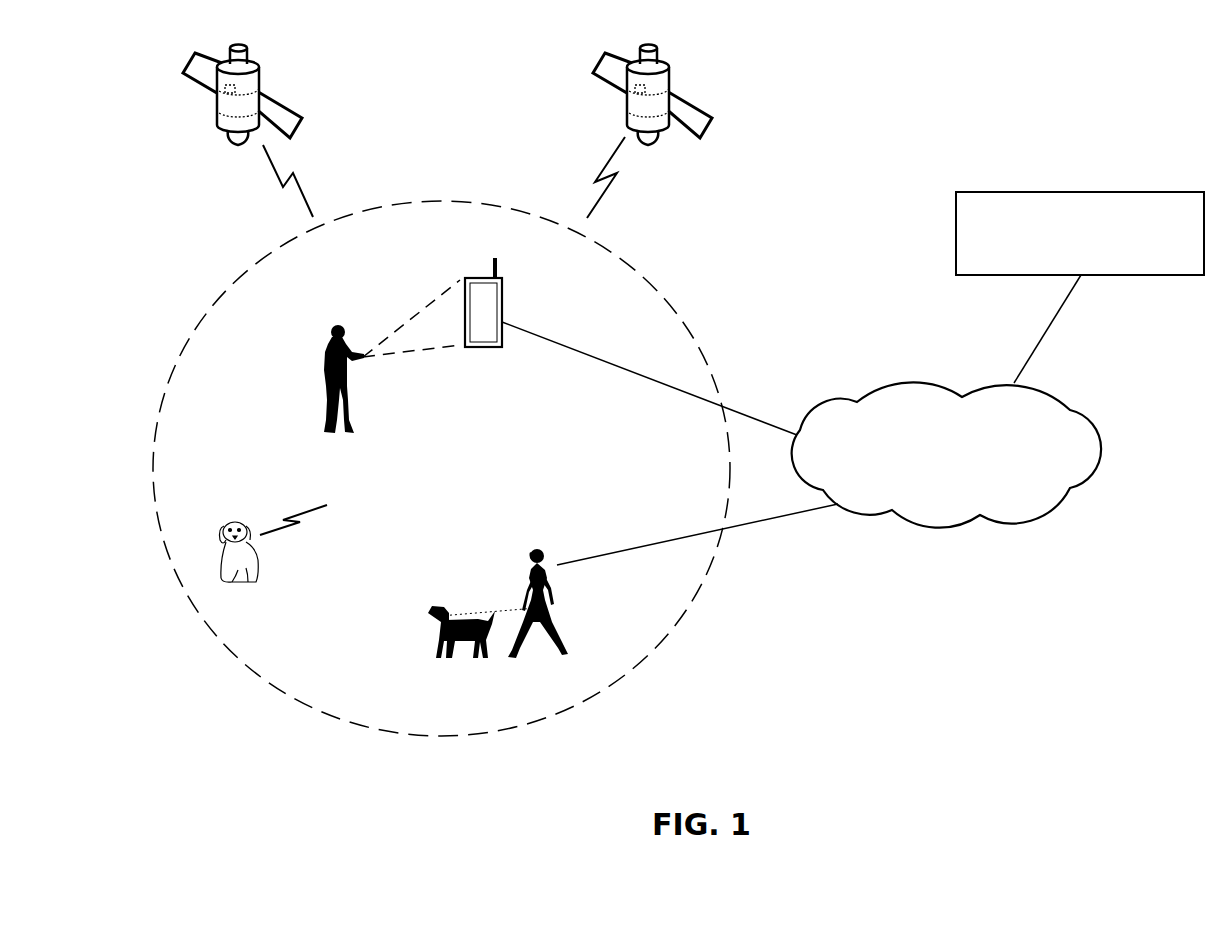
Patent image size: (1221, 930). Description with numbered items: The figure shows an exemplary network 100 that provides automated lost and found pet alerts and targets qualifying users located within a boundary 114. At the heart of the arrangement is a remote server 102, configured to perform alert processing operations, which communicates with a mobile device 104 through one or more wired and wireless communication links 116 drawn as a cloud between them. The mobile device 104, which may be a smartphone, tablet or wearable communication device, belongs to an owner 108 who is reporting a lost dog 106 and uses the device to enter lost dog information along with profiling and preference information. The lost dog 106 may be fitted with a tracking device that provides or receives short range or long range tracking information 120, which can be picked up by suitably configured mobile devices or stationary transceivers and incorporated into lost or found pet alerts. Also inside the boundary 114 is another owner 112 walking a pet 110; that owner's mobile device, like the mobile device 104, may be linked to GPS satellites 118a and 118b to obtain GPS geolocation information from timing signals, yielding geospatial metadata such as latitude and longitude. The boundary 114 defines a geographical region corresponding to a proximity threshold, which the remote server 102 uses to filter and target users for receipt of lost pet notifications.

The network 100 is at (1011, 96).
The remote server 102 is at (1080, 287).
The mobile device 104 is at (502, 302).
The lost dog 106 is at (255, 567).
The owner 108 is at (323, 363).
The pet 110 is at (440, 636).
The owner 112 is at (555, 598).
The boundary 114 is at (296, 700).
The wired and wireless communication links 116 is at (1083, 488).
The GPS satellite 118a is at (218, 108).
The GPS satellite 118b is at (628, 108).
The tracking information 120 is at (300, 522).